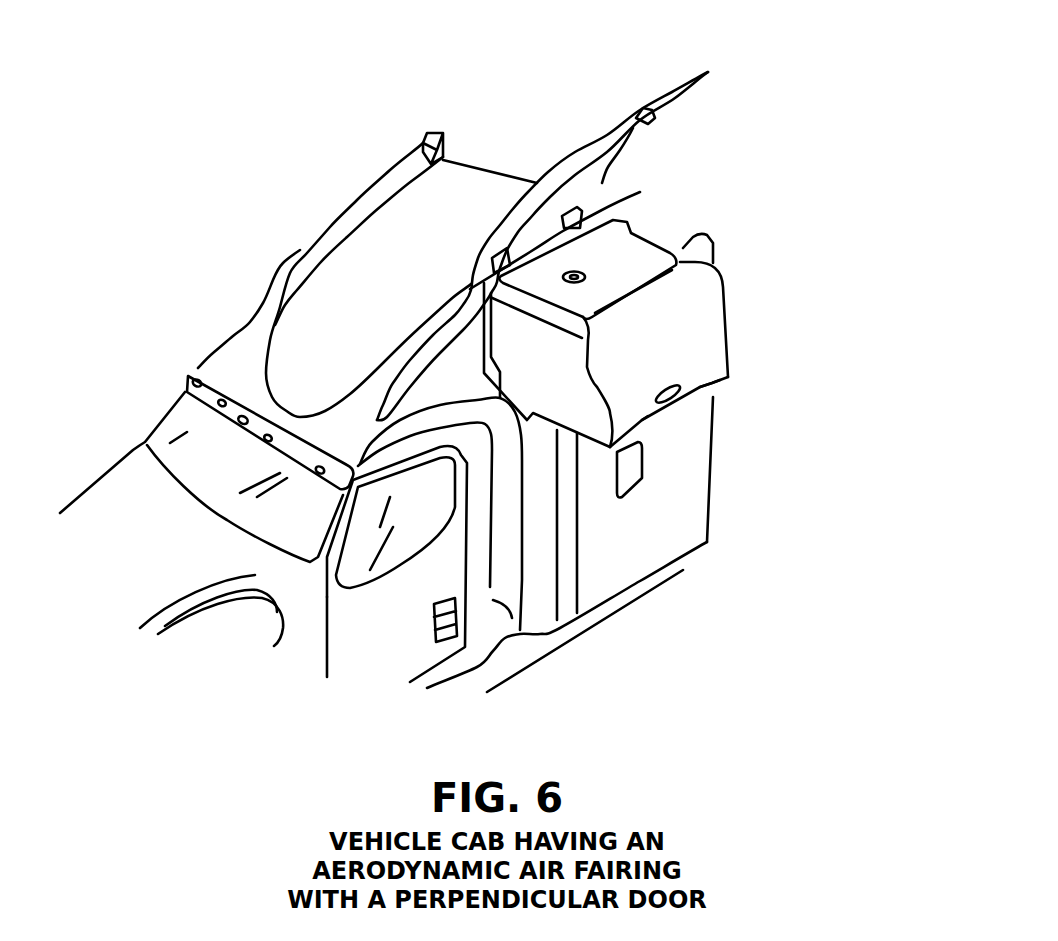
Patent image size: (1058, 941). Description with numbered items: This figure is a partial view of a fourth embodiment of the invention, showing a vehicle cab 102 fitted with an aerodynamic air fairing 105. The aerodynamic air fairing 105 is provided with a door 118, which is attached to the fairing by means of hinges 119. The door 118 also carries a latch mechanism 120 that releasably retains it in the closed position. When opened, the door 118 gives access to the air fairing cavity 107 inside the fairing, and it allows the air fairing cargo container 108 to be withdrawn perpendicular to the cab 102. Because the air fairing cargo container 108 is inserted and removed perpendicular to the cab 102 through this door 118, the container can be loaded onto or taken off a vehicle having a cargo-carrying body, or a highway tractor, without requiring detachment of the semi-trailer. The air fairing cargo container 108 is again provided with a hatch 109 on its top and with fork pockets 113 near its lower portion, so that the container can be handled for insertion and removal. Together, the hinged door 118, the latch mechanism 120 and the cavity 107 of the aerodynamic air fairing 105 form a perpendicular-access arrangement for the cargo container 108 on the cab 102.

The cab 102 is at (222, 345).
The aerodynamic air fairing 105 is at (306, 255).
The air fairing cavity 107 is at (460, 158).
The air fairing cargo container 108 is at (688, 313).
The hatch 109 is at (620, 265).
The fork pockets 113 is at (643, 419).
The door 118 is at (566, 158).
The hinges 119 is at (505, 251).
The latch mechanism 120 is at (634, 112).